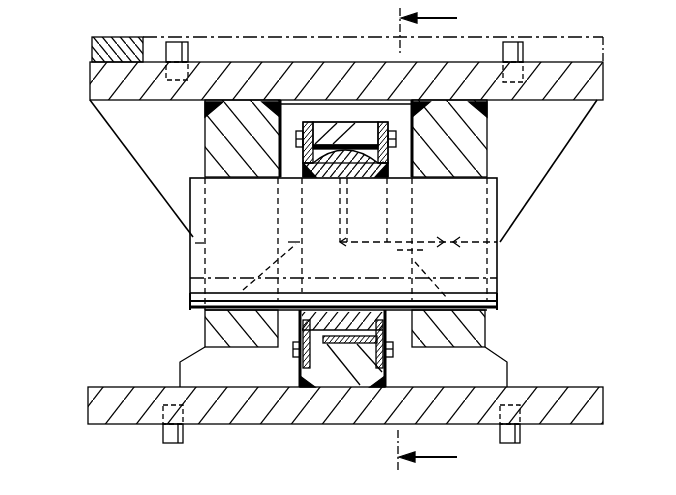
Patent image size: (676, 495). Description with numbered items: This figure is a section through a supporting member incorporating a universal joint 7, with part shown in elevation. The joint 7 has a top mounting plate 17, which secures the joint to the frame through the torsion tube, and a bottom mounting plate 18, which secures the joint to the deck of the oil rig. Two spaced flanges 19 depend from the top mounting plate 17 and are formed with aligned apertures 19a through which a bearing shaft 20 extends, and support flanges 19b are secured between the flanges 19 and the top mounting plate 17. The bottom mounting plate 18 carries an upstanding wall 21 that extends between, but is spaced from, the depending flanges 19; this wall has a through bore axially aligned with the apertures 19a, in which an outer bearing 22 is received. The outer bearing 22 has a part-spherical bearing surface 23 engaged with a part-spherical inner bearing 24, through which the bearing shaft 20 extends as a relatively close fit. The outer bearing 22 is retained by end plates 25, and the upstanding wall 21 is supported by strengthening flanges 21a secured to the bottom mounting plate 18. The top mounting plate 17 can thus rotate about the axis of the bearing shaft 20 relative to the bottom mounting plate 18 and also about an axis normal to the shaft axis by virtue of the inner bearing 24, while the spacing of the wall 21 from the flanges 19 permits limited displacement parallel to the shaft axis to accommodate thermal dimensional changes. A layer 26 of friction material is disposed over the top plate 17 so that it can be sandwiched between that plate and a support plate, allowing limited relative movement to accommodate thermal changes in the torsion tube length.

The universal joint 7 is at (152, 219).
The top mounting plate 17 is at (246, 76).
The bottom mounting plate 18 is at (521, 355).
The flanges 19 is at (227, 151).
The apertures 19a is at (450, 178).
The support flanges 19b is at (182, 141).
The bearing shaft 20 is at (260, 235).
The upstanding wall 21 is at (347, 124).
The strengthening flanges 21a is at (248, 382).
The outer bearing 22 is at (330, 330).
The part-spherical bearing surface 23 is at (303, 331).
The part-spherical inner bearing 24 is at (325, 160).
The end plates 25 is at (390, 128).
The layer of friction material 26 is at (138, 55).